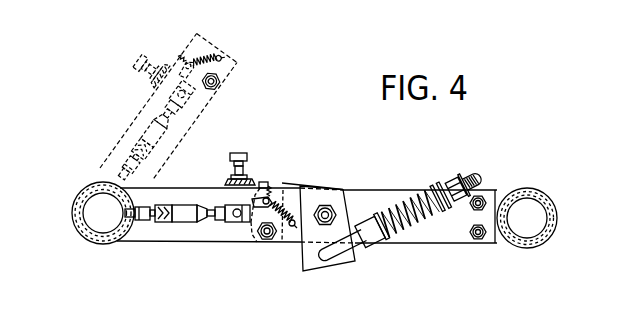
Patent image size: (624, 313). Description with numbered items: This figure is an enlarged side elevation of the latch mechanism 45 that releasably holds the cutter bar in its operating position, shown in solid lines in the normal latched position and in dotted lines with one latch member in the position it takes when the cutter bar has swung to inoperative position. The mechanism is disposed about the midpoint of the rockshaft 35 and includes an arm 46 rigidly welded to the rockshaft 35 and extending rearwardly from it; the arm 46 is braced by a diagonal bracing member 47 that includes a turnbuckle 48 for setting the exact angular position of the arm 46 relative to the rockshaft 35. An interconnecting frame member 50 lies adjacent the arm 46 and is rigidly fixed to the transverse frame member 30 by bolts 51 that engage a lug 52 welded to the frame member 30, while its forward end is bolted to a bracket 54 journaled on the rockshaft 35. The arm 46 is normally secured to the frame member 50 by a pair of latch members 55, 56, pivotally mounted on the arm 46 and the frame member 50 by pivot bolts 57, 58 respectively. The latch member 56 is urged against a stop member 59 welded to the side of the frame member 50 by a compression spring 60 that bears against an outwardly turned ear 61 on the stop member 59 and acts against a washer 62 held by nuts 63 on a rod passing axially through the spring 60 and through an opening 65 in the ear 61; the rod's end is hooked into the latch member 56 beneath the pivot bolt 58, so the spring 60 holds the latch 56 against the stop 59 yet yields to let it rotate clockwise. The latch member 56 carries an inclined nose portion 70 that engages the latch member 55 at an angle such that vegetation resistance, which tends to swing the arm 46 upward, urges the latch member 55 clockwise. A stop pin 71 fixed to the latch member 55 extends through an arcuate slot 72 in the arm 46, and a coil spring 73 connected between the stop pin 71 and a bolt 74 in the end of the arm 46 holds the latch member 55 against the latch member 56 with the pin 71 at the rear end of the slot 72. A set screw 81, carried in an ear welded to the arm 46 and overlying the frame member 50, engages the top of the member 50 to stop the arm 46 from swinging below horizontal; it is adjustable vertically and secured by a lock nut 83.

The transverse frame member 30 is at (551, 230).
The rockshaft 35 is at (85, 240).
The latch mechanism 45 is at (353, 163).
The arm 46 is at (163, 235).
The diagonal bracing member 47 is at (140, 221).
The turnbuckle 48 is at (185, 219).
The interconnecting frame member 50 is at (433, 237).
The bolts 51 is at (481, 197).
The lug 52 is at (510, 193).
The bracket 54 is at (75, 205).
The latch member 55 is at (252, 238).
The latch member 56 is at (312, 264).
The pivot bolt 57 is at (267, 245).
The pivot bolt 58 is at (326, 207).
The stop member 59 is at (362, 249).
The compression spring 60 is at (407, 197).
The ear 61 is at (382, 238).
The washer 62 is at (437, 183).
The nuts 63 is at (458, 172).
The opening 65 is at (362, 226).
The inclined nose portion 70 is at (280, 183).
The stop pin 71 is at (271, 193).
The arcuate slot 72 is at (252, 202).
The coil spring 73 is at (284, 230).
The bolt 74 is at (296, 184).
The set screw 81 is at (230, 158).
The lock nut 83 is at (226, 173).